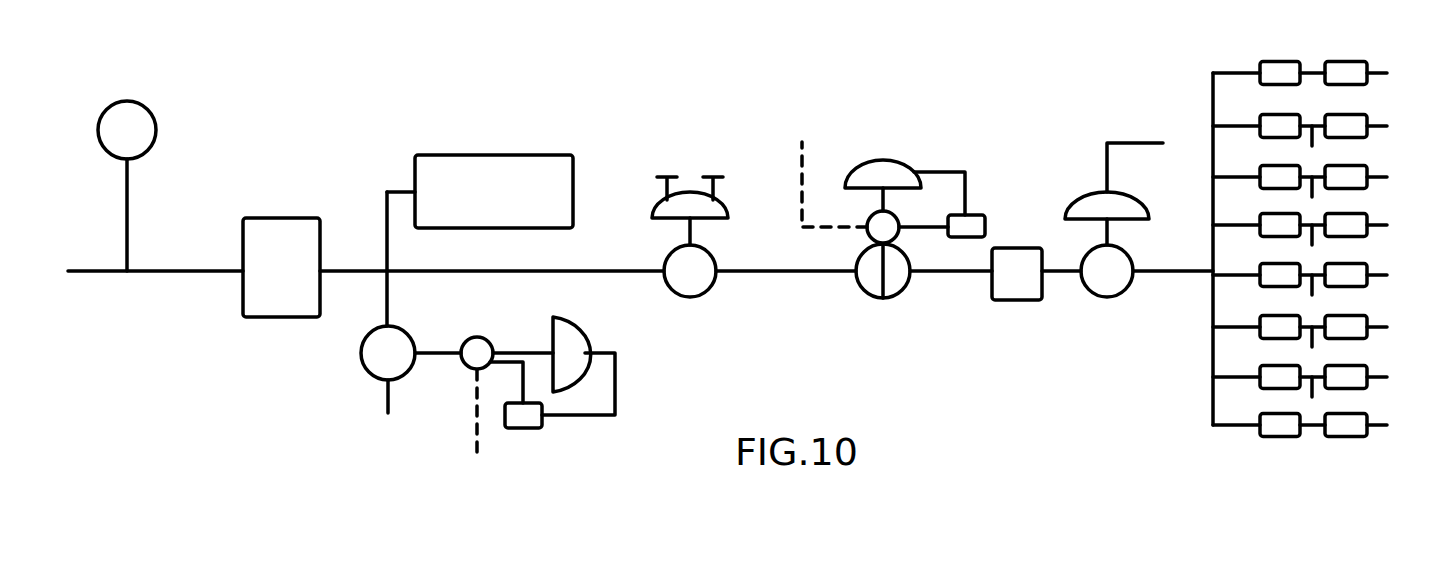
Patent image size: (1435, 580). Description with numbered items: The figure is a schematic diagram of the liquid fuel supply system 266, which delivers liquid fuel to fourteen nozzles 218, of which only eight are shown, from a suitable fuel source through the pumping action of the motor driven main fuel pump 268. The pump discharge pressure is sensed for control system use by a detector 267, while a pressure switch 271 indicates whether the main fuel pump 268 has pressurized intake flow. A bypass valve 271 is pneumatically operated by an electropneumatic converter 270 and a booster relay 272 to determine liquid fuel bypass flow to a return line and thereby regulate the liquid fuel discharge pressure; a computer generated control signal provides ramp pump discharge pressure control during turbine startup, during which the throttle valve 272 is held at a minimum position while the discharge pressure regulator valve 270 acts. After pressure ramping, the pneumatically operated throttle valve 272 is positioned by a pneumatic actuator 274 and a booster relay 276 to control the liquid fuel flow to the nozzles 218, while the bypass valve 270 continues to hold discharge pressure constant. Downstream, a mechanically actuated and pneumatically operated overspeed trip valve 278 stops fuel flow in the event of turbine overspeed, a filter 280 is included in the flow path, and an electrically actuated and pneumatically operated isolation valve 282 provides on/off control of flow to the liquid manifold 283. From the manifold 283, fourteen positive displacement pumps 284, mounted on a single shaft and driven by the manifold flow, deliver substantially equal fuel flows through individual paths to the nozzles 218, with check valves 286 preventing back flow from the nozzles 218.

The liquid fuel supply system 266 is at (818, 384).
The detector 267 is at (511, 155).
The main fuel pump 268 is at (276, 218).
The electropneumatic converter 270 is at (362, 365).
The bypass valve 271 is at (112, 105).
The throttle valve 272 is at (530, 428).
The pneumatic actuator 274 is at (872, 215).
The booster relay 276 is at (985, 216).
The overspeed trip valve 278 is at (705, 291).
The filter 280 is at (1018, 301).
The isolation valve 282 is at (1103, 298).
The liquid manifold 283 is at (1176, 270).
The positive displacement pumps 284 is at (1275, 62).
The check valves 286 is at (1360, 117).
The nozzles 218 is at (1385, 178).